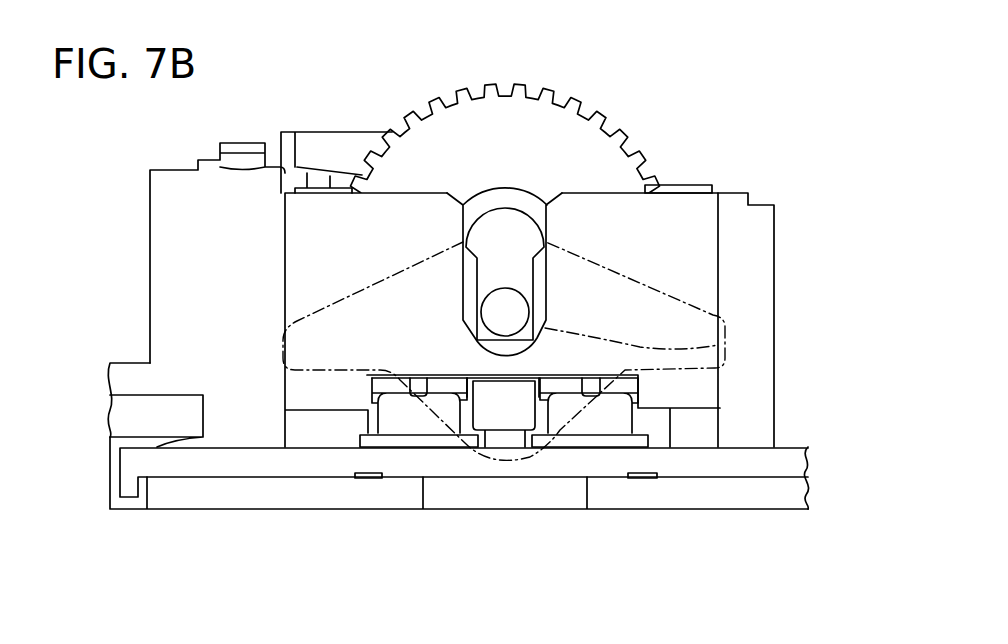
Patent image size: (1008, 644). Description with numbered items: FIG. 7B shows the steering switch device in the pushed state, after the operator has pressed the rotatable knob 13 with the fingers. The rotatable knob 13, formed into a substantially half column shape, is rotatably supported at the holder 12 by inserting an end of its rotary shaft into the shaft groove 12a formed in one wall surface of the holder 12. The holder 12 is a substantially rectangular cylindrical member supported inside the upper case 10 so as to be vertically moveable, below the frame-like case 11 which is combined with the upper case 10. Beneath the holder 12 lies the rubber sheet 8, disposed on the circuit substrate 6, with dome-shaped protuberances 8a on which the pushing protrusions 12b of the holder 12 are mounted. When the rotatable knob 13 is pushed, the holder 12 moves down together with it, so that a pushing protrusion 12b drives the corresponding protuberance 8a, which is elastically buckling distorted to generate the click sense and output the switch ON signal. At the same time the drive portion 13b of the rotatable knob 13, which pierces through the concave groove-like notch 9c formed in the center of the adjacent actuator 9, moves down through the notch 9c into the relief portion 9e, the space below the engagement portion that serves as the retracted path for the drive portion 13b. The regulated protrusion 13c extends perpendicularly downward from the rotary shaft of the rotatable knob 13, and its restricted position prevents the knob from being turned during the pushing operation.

The circuit substrate 6 is at (778, 495).
The rubber sheet 8 is at (787, 465).
The dome-shaped protuberance 8a is at (578, 420).
The actuator 9 is at (640, 273).
The notch 9c is at (478, 277).
The relief portion 9e is at (722, 345).
The upper case 10 is at (760, 208).
The frame-like case 11 is at (313, 138).
The holder 12 is at (617, 207).
The shaft groove 12a is at (530, 212).
The pushing protrusion 12b is at (422, 392).
The rotatable knob 13 is at (412, 127).
The drive portion 13b is at (502, 300).
The regulated protrusion 13c is at (505, 430).